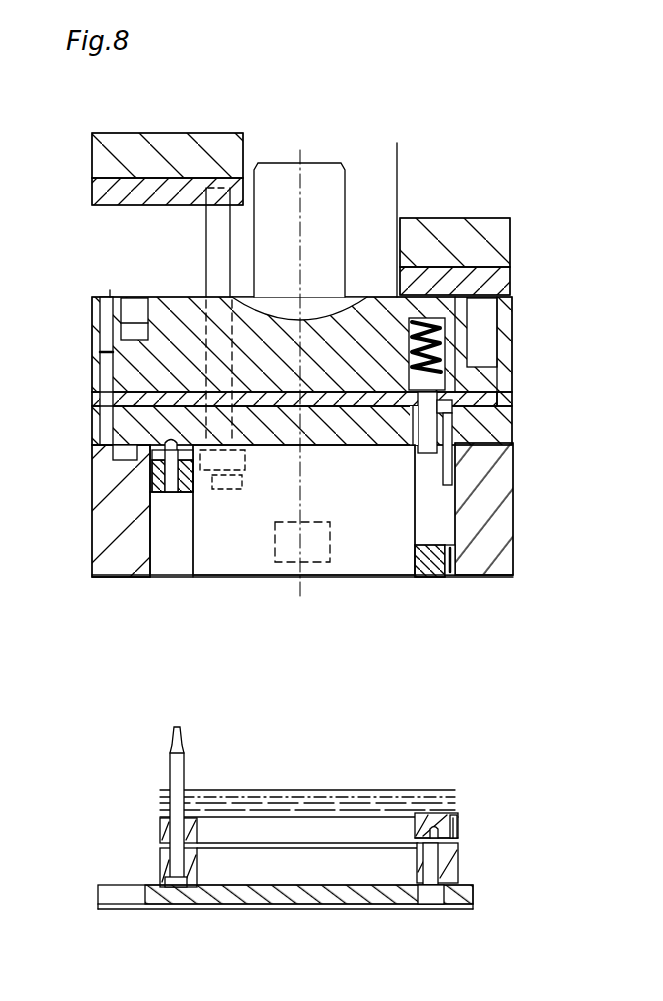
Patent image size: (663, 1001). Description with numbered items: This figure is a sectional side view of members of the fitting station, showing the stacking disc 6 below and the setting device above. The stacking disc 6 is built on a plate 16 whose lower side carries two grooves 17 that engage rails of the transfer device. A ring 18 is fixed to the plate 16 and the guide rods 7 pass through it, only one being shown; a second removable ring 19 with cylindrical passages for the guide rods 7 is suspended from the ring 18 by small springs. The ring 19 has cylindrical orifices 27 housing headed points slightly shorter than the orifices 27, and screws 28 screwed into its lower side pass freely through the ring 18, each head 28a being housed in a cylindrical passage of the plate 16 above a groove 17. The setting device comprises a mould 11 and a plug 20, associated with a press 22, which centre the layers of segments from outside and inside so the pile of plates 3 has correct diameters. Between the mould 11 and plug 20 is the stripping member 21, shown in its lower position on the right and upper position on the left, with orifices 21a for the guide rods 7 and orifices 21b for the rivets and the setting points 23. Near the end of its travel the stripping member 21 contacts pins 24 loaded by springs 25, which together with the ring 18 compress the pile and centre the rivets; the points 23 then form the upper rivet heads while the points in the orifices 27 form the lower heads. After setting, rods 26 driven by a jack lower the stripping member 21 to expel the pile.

The pile of plates 3 is at (370, 800).
The stacking disc 6 is at (132, 857).
The guide rods 7 is at (176, 760).
The mould 11 is at (110, 483).
The plate 16 is at (471, 889).
The grooves 17 is at (330, 905).
The ring 18 is at (452, 866).
The removable ring 19 is at (165, 830).
The plug 20 is at (260, 553).
The stripping member 21 is at (160, 500).
The orifices for guide rods 21a is at (172, 492).
The orifices for rivets and setting points 21b is at (445, 578).
The press 22 is at (372, 296).
The setting points 23 is at (447, 463).
The pins 24 is at (428, 428).
The springs 25 is at (445, 345).
The rods 26 is at (218, 247).
The cylindrical orifices 27 is at (453, 823).
The screws 28 is at (432, 858).
The screw head 28a is at (430, 893).